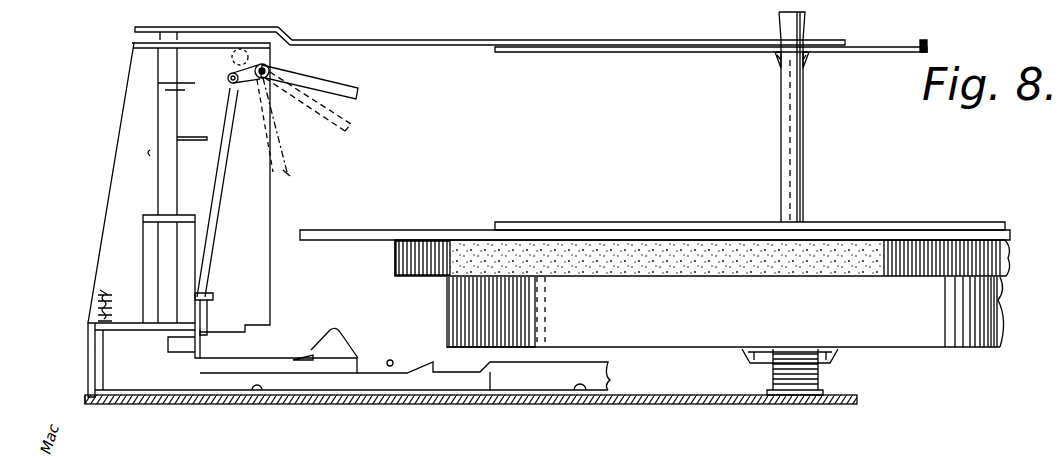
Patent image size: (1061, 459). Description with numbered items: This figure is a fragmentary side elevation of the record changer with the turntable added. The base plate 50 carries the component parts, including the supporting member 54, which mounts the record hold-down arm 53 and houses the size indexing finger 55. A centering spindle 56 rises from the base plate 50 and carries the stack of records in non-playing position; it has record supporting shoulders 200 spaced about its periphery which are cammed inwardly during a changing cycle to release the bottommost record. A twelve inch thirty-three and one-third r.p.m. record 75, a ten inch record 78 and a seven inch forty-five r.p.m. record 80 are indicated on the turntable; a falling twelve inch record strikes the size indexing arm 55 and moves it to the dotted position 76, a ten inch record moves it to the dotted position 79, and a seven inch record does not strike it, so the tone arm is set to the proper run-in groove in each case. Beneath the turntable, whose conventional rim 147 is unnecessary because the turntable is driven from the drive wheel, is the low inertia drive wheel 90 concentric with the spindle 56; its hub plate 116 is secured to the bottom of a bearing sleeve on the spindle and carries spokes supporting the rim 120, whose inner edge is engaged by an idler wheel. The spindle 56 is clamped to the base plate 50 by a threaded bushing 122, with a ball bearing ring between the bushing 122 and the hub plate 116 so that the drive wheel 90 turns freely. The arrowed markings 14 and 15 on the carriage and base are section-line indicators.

The carriage 14 is at (180, 15).
The base slide 15 is at (310, 421).
The base plate 50 is at (663, 398).
The record hold-down arm 53 is at (462, 45).
The supporting member 54 is at (126, 168).
The size indexing finger 55 is at (357, 67).
The centering spindle 56 is at (793, 147).
The twelve inch record 75 is at (325, 238).
The dotted line position of size indexing arm 76 is at (293, 167).
The ten inch record 78 is at (438, 232).
The dotted line position of size indexing arm 79 is at (344, 127).
The seven inch record 80 is at (680, 60).
The low inertia drive wheel 90 is at (890, 350).
The hub plate 116 is at (758, 363).
The rim 120 is at (983, 295).
The threaded bushing 122 is at (820, 388).
The turntable rim 147 is at (407, 260).
The record supporting shoulders 200 is at (778, 62).